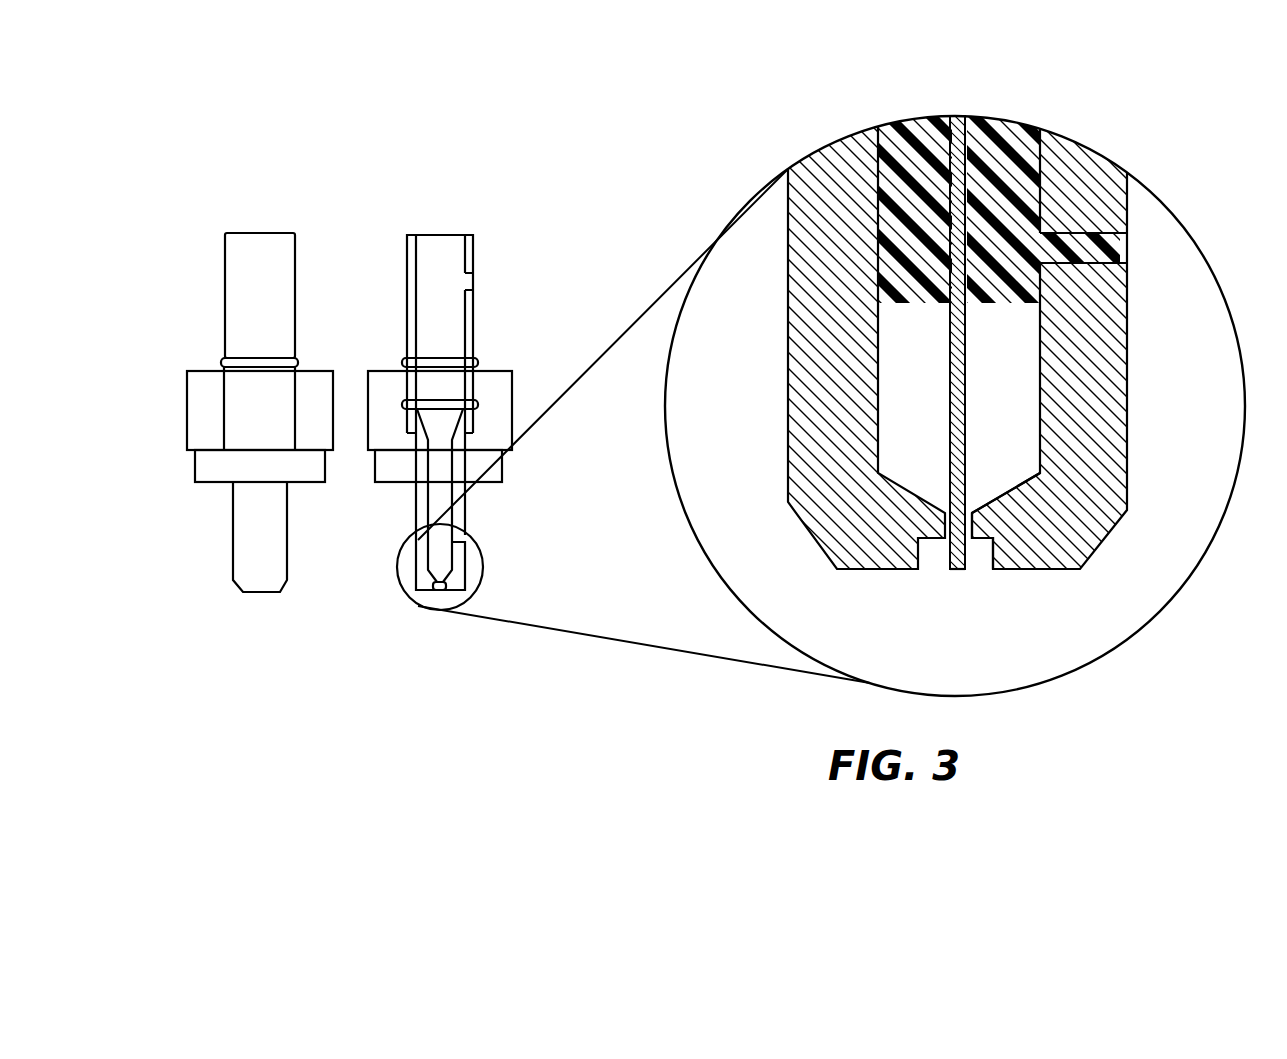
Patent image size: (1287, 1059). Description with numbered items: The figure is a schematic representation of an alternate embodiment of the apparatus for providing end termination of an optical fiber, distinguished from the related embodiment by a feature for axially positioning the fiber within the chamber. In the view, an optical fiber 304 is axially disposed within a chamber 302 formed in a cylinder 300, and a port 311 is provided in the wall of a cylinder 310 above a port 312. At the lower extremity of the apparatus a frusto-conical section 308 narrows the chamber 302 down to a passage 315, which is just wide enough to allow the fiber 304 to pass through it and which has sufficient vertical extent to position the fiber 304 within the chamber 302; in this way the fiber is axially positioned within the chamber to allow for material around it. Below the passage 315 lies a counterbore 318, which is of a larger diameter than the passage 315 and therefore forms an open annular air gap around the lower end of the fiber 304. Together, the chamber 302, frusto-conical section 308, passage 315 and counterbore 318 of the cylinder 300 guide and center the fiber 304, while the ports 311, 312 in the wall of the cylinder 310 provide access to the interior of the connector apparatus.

The cylinder 300 is at (827, 168).
The chamber 302 is at (906, 140).
The optical fiber 304 is at (958, 118).
The frusto-conical section 308 is at (1022, 490).
The cylinder 310 is at (407, 253).
The port 311 is at (472, 280).
The port 312 is at (1097, 247).
The passage 315 is at (996, 571).
The counterbore 318 is at (973, 560).